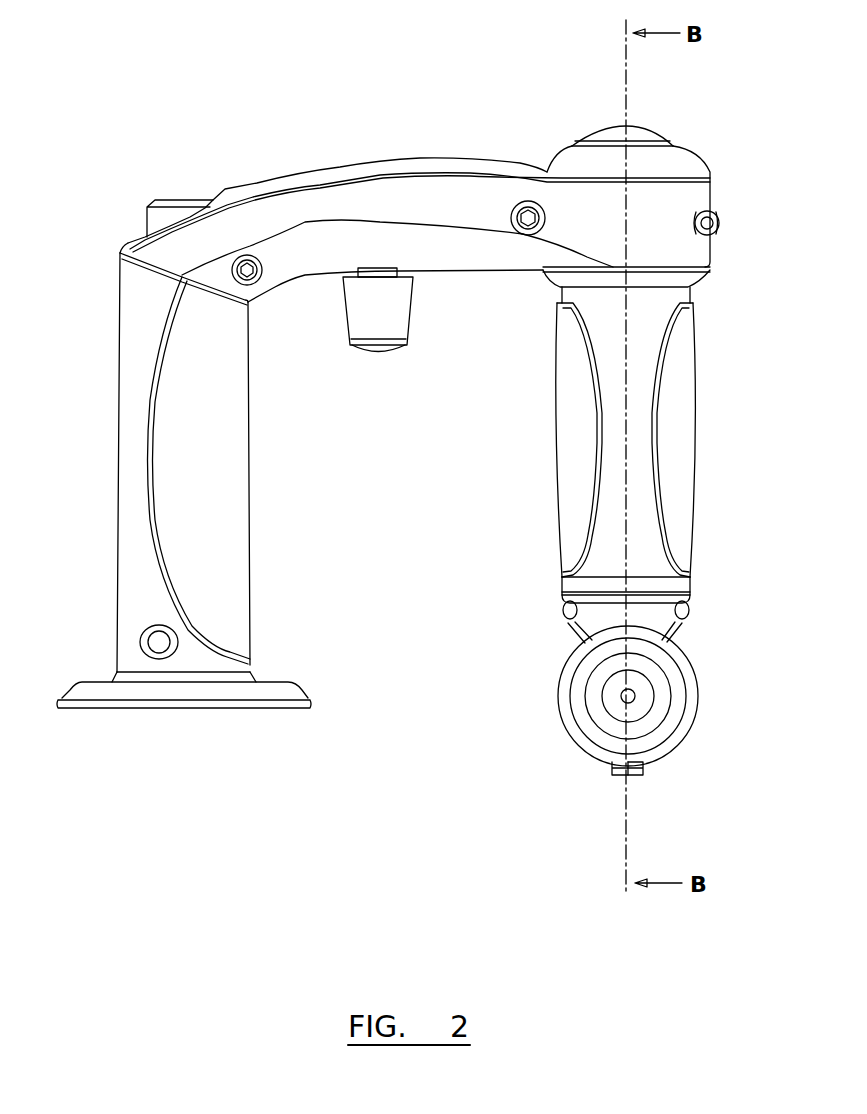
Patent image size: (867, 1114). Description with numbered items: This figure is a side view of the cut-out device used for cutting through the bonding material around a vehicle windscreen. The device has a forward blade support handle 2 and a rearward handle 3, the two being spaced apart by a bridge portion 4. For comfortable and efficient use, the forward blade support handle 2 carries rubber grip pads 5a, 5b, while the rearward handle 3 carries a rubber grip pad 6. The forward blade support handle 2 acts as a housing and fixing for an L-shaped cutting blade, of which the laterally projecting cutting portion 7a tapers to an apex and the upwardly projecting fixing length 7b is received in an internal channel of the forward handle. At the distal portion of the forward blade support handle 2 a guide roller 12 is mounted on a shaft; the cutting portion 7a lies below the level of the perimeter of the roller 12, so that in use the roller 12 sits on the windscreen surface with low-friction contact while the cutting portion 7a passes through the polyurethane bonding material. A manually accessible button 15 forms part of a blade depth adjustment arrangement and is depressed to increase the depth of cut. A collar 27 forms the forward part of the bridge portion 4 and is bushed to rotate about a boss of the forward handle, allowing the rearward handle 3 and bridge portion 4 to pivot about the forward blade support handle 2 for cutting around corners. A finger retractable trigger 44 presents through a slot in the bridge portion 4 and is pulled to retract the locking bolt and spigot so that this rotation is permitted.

The forward blade support handle 2 is at (640, 377).
The rearward handle 3 is at (135, 378).
The bridge portion 4 is at (386, 160).
The rubber grip pad 5a is at (675, 473).
The rubber grip pad 5b is at (575, 503).
The rubber grip pad 6 is at (212, 505).
The laterally projecting cutting portion 7a is at (643, 772).
The upwardly projecting fixing length 7b is at (612, 765).
The guide roller 12 is at (696, 695).
The manually accessible button 15 is at (637, 132).
The collar 27 is at (690, 205).
The finger retractable trigger 44 is at (387, 317).